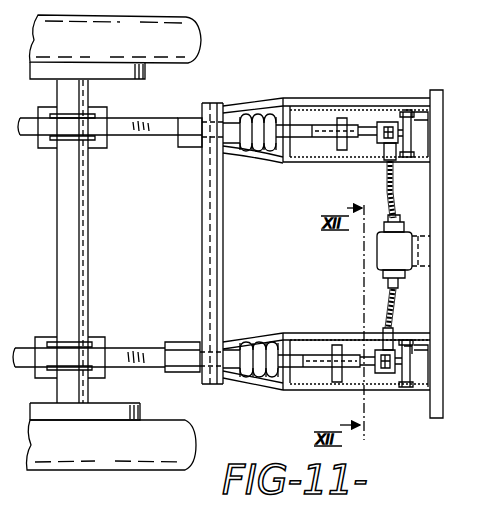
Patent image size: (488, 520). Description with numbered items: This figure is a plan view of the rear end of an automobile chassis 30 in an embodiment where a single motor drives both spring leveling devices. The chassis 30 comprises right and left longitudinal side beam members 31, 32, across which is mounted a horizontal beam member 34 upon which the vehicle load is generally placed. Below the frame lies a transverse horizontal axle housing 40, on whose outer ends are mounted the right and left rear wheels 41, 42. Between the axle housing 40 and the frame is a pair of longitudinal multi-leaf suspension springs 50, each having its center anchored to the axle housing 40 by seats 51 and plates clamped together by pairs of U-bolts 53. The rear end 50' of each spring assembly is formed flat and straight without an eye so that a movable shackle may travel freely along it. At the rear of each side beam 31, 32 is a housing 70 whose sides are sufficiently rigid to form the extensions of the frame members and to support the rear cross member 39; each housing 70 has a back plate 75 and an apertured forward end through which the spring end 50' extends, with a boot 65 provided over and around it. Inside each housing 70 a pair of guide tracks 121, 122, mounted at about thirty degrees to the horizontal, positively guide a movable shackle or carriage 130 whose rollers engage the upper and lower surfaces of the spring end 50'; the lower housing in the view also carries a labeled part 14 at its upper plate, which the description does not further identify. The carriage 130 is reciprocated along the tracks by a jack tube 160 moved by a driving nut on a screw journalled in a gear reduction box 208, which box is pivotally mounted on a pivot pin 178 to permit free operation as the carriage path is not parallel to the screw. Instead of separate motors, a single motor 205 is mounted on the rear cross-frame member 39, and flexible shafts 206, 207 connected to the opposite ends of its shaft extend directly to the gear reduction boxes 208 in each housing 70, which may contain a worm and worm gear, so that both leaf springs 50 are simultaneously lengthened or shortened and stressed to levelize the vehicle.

The right rear wheel 41 is at (192, 31).
The left rear wheel 42 is at (103, 470).
The axle housing 40 is at (82, 220).
The seat 51 is at (96, 148).
The U-bolt 53 is at (50, 118).
The automobile chassis 30 is at (145, 117).
The right longitudinal side beam member 31 is at (190, 148).
The left longitudinal side beam member 32 is at (173, 342).
The multi-leaf suspension spring 50 is at (89, 266).
The horizontal beam member 34 is at (225, 246).
The rear cross member 39 is at (434, 198).
The housing 70 is at (322, 104).
The guide track 121 is at (305, 108).
The guide track 122 is at (308, 162).
The housing plate 14 is at (328, 340).
The rear end of leaf spring assembly 50' is at (300, 275).
The boot 65 is at (263, 153).
The movable shackle or carriage 130 is at (352, 119).
The jack tube 160 is at (369, 123).
The gear reduction box 208 is at (391, 124).
The pivot pin 178 is at (413, 120).
The back plate 75 is at (432, 128).
The flexible shaft 206 is at (386, 183).
The single motor 205 is at (380, 247).
The flexible shaft 207 is at (394, 290).